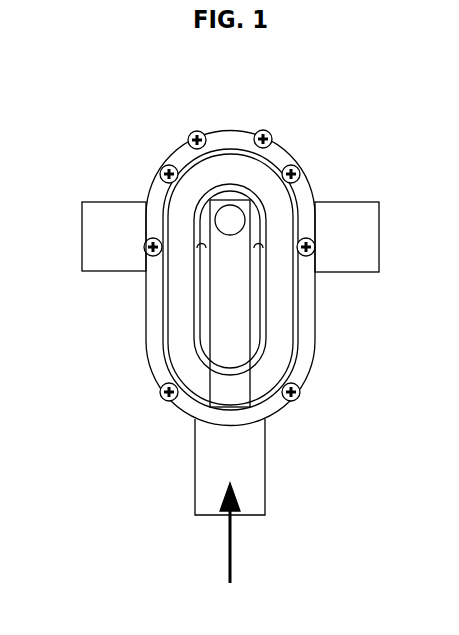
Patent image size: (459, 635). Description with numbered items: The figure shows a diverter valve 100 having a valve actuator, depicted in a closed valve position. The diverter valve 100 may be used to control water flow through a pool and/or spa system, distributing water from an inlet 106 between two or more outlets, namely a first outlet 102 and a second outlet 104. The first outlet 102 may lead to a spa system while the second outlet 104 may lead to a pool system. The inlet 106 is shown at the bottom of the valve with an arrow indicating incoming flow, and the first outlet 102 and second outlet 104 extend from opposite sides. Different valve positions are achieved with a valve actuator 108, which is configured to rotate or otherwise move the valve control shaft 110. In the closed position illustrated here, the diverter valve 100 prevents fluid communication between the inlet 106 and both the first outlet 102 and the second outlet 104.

The diverter valve 100 is at (241, 335).
The first outlet 102 is at (347, 200).
The second outlet 104 is at (109, 200).
The inlet 106 is at (255, 462).
The valve actuator 108 is at (313, 336).
The valve control shaft 110 is at (231, 212).